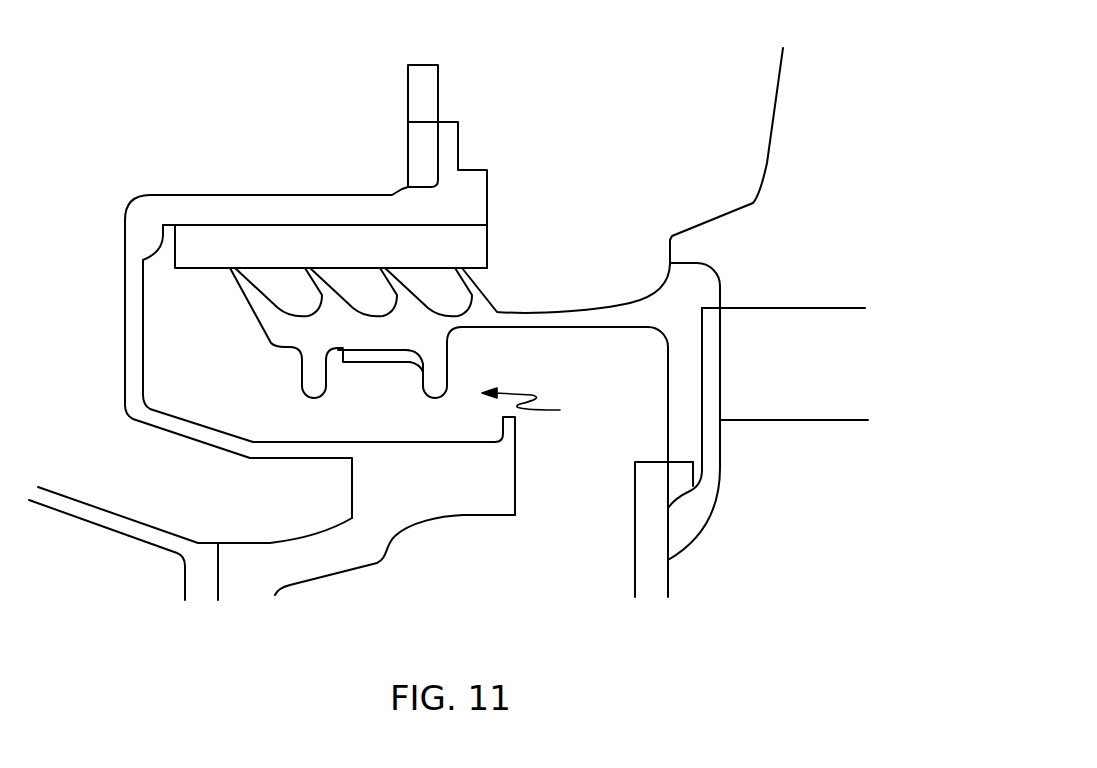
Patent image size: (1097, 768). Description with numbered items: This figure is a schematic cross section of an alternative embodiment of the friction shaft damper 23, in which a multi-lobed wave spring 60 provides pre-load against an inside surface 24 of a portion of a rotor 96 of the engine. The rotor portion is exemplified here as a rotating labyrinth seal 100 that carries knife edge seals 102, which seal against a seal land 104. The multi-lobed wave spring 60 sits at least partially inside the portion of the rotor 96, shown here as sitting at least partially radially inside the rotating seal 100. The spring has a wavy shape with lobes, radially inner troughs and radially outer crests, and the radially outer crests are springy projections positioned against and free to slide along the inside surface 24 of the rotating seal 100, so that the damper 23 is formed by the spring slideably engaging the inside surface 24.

The damper 23 is at (537, 405).
The inside surface 24 is at (410, 362).
The multi-lobed wave spring 60 is at (372, 362).
The rotor 96 is at (596, 310).
The rotating labyrinth seal 100 is at (262, 328).
The knife edge seals 102 is at (478, 286).
The seal land 104 is at (190, 245).